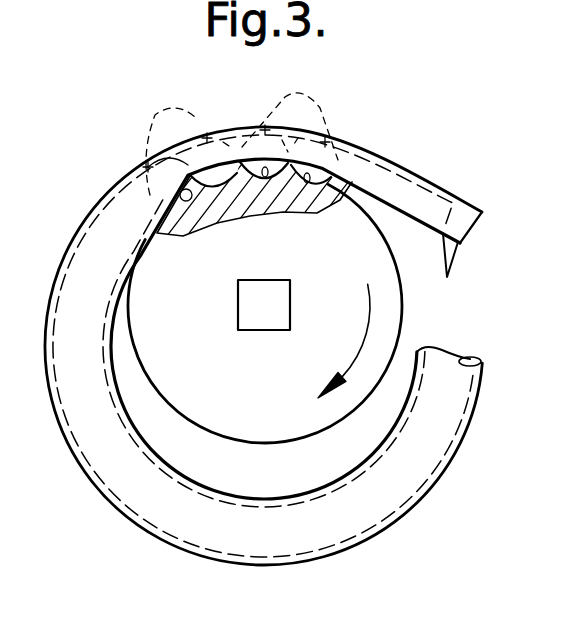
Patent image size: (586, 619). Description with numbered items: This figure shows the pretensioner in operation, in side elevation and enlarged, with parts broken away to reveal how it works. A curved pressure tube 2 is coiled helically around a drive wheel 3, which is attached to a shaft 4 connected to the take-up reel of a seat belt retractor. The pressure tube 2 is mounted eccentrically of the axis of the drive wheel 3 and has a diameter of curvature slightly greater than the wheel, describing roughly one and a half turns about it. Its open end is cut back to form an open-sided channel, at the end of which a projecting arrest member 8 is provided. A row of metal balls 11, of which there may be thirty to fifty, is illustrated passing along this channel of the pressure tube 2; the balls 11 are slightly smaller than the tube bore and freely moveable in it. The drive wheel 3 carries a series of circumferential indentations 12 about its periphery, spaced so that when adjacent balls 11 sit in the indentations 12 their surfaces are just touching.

The curved pressure tube 2 is at (427, 453).
The drive wheel 3 is at (227, 400).
The shaft 4 is at (290, 302).
The projecting arrest member 8 is at (452, 252).
The metal balls 11 is at (202, 125).
The circumferential indentations 12 is at (183, 190).